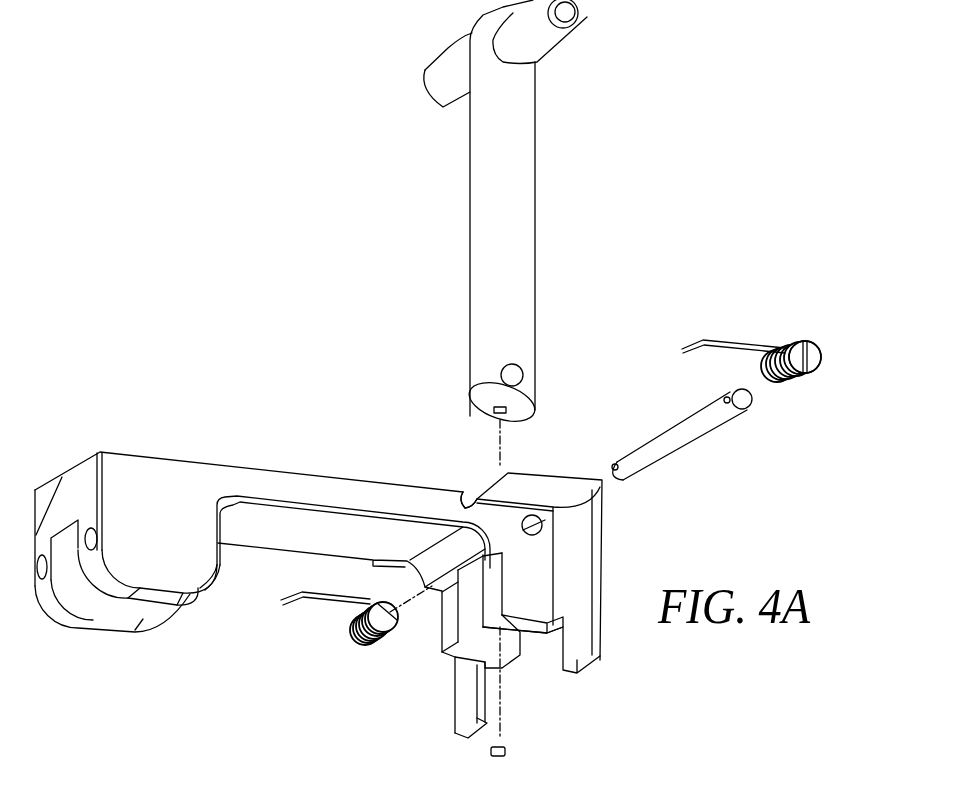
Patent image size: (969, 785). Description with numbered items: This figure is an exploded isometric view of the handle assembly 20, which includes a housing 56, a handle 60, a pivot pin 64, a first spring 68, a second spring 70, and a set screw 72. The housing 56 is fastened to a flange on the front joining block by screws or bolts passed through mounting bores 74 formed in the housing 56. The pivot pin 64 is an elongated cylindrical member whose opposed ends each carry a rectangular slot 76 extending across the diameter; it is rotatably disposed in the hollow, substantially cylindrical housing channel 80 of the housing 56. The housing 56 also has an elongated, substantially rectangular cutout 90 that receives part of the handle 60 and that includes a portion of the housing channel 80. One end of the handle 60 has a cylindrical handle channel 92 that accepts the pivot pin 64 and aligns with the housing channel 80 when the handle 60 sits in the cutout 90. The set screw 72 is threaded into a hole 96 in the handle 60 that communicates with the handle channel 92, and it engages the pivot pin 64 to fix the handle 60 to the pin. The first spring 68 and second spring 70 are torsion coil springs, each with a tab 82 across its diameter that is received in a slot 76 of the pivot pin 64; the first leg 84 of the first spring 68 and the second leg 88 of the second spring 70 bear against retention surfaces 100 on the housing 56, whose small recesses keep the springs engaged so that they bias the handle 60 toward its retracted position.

The handle assembly 20 is at (402, 445).
The housing 56 is at (152, 457).
The handle 60 is at (535, 172).
The pivot pin 64 is at (702, 440).
The first spring 68 is at (787, 343).
The second spring 70 is at (360, 645).
The set screw 72 is at (505, 752).
The mounting bores 74 is at (90, 526).
The rectangular slot 76 is at (616, 463).
The housing channel 80 is at (540, 532).
The tab 82 is at (820, 348).
The first leg 84 is at (692, 338).
The second leg 88 is at (303, 597).
The cutout 90 is at (527, 640).
The handle channel 92 is at (527, 375).
The hole 96 is at (495, 412).
The retention surfaces 100 is at (462, 493).